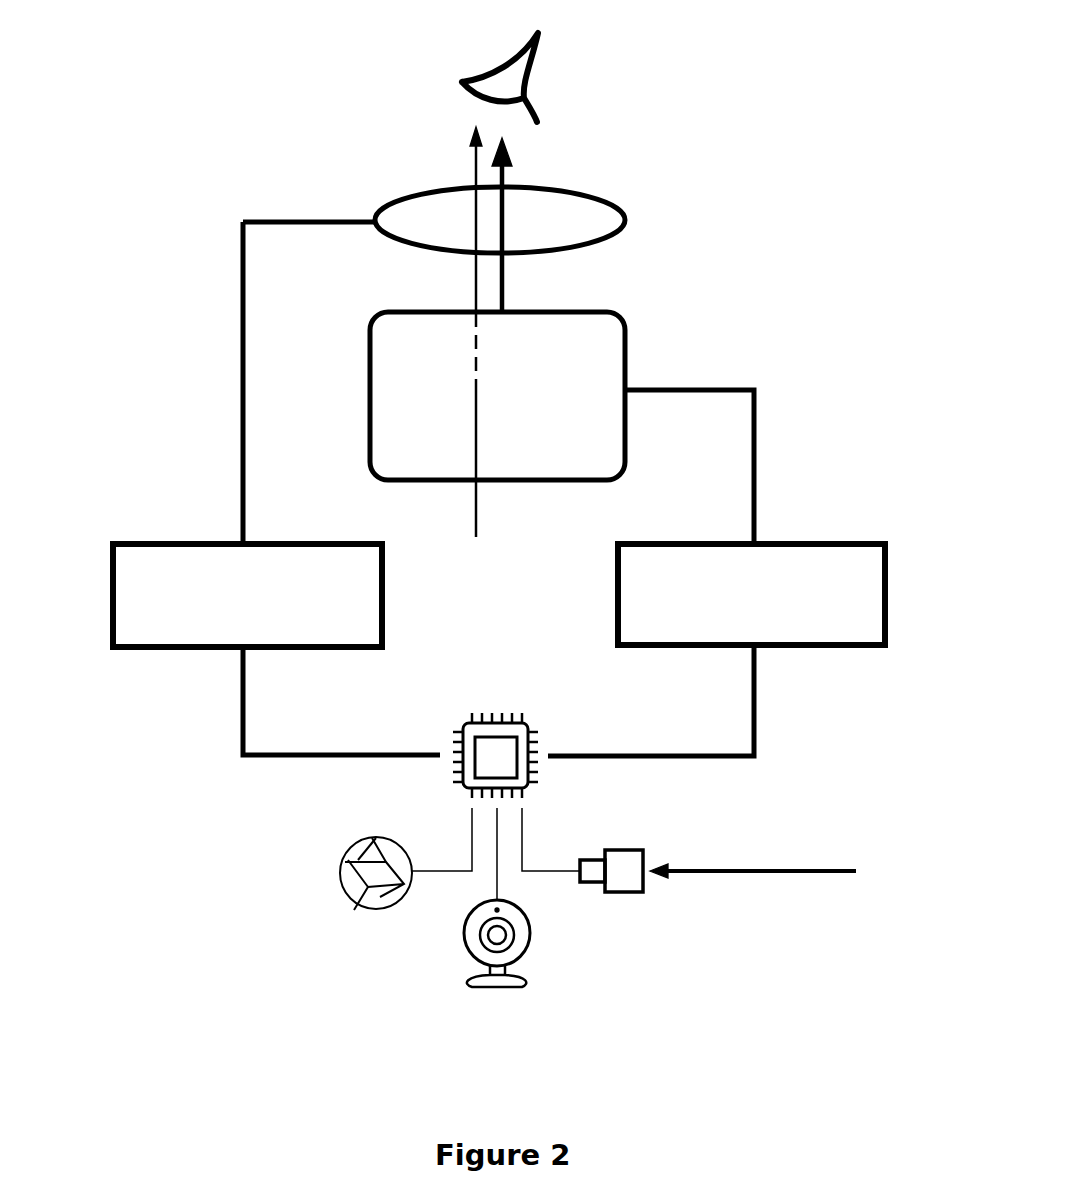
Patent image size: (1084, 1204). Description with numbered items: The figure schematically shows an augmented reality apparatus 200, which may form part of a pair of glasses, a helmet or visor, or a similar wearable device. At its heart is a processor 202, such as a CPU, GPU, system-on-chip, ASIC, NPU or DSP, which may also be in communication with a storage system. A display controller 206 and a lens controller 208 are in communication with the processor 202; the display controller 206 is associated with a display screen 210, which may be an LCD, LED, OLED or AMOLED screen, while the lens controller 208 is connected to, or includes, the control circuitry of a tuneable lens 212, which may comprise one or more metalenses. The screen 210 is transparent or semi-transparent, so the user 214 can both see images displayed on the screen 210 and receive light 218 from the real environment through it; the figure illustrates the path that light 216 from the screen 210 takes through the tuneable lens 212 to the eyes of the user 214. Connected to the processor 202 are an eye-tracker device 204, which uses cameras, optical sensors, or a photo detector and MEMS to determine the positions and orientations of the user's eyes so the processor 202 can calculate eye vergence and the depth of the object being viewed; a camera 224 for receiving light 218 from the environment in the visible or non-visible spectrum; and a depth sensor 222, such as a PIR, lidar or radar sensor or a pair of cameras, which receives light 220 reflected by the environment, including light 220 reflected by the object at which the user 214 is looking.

The apparatus 200 is at (232, 188).
The processor 202 is at (532, 724).
The eye-tracker device 204 is at (462, 937).
The display controller 206 is at (885, 543).
The lens controller 208 is at (113, 647).
The display screen 210 is at (618, 314).
The tuneable lens 212 is at (624, 215).
The user 214 is at (531, 88).
The light from the screen 216 is at (504, 285).
The light from the environment 218 is at (474, 278).
The reflected light 220 is at (753, 875).
The depth sensor 222 is at (643, 850).
The camera 224 is at (353, 897).